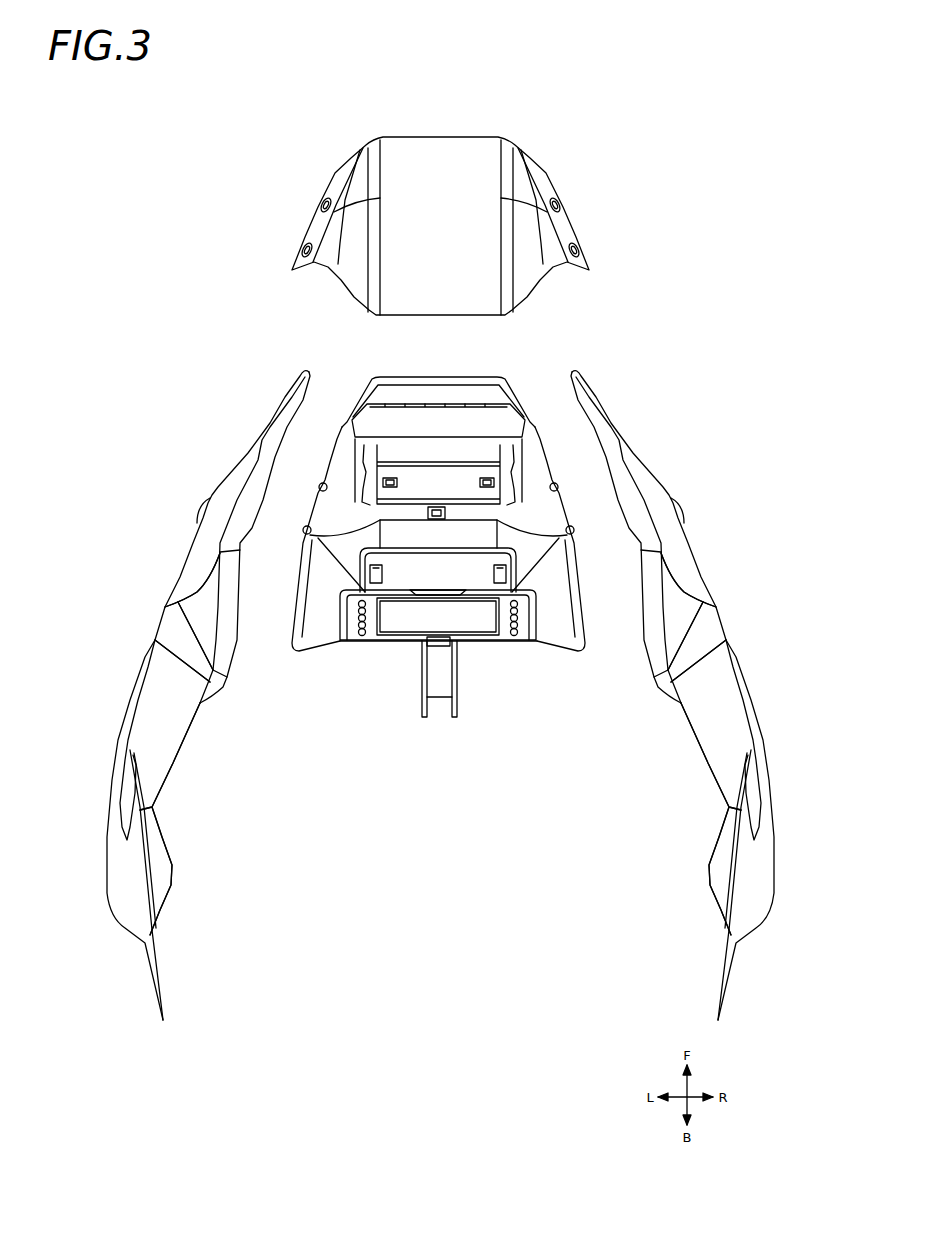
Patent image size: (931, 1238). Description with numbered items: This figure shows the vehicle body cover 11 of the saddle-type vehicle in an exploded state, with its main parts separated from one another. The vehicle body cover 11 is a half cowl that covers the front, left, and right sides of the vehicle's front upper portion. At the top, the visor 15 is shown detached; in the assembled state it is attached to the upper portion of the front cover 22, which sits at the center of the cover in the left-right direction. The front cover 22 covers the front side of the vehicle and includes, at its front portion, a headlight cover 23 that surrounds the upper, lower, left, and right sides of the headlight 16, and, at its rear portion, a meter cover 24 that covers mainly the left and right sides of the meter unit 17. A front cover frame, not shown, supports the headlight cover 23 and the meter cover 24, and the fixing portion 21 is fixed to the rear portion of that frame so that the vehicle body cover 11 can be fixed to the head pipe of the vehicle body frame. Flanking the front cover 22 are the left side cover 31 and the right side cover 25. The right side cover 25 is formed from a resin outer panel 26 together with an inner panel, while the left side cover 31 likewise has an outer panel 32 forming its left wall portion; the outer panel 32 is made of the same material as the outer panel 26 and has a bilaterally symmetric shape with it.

The vehicle body cover 11 is at (581, 330).
The visor 15 is at (437, 162).
The headlight 16 is at (431, 417).
The meter unit 17 is at (403, 620).
The fixing portion 21 is at (440, 685).
The front cover 22 is at (386, 365).
The headlight cover 23 is at (537, 460).
The meter cover 24 is at (527, 563).
The right side cover 25 is at (682, 492).
The outer panel 26 is at (688, 577).
The left side cover 31 is at (208, 482).
The outer panel 32 is at (183, 577).